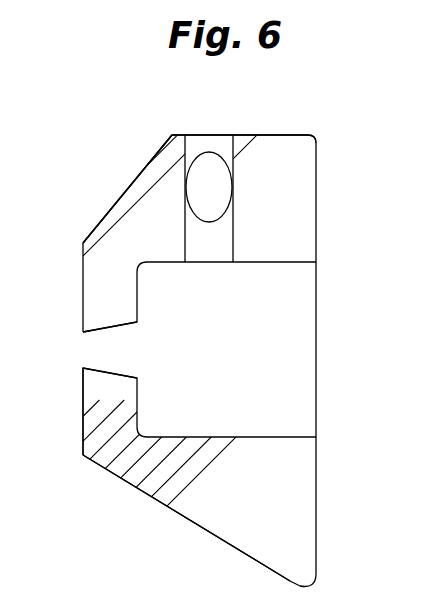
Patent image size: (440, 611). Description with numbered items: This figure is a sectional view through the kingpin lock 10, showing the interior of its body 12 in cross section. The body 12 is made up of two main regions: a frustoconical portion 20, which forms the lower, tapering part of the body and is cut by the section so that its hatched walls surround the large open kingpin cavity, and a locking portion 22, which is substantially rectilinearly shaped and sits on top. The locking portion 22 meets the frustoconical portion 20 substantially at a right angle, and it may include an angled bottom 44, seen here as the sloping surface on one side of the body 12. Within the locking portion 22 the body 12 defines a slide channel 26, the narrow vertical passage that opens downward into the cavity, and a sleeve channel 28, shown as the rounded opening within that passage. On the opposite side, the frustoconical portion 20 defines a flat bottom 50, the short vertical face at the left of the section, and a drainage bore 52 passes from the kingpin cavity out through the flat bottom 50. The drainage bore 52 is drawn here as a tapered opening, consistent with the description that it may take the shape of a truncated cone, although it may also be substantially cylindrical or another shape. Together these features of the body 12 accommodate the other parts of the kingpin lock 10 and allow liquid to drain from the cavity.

The kingpin lock 10 is at (174, 103).
The body 12 is at (137, 178).
The frustoconical portion 20 is at (172, 509).
The locking portion 22 is at (270, 135).
The slide channel 26 is at (217, 232).
The sleeve channel 28 is at (220, 152).
The angled bottom 44 is at (162, 148).
The flat bottom 50 is at (82, 442).
The drainage bore 52 is at (101, 367).